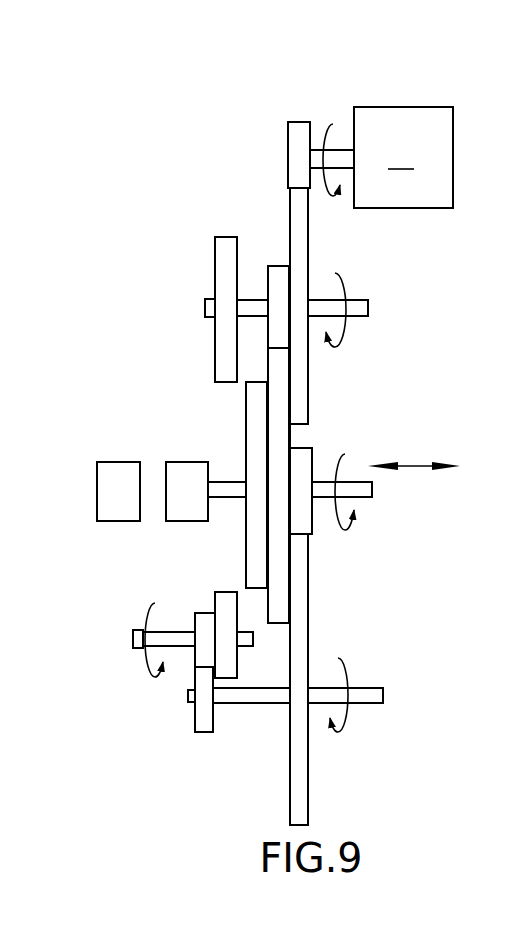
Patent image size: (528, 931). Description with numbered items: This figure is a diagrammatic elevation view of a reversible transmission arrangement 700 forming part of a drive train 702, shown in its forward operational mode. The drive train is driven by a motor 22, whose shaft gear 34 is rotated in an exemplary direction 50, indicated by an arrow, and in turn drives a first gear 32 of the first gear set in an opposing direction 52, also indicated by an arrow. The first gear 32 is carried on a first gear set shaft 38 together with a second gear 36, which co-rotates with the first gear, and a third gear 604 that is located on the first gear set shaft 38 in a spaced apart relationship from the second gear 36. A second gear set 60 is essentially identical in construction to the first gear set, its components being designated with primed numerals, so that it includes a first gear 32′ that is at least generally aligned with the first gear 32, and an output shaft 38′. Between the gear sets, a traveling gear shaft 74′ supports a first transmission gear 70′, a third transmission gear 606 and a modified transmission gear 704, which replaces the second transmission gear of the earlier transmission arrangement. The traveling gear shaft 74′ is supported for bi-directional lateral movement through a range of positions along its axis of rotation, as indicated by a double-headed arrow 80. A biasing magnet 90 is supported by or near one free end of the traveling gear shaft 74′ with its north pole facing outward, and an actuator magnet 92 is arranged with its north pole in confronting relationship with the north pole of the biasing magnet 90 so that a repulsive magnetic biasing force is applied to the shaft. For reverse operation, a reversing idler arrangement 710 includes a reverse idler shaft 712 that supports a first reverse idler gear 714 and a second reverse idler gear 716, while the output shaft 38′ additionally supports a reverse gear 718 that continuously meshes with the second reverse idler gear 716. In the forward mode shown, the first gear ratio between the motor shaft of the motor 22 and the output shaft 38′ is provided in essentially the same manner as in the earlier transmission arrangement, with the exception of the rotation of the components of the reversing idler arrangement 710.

The motor 22 is at (381, 157).
The first gear 32 is at (308, 222).
The first gear of the second gear set 32′ is at (310, 808).
The shaft gear 34 is at (288, 128).
The second gear 36 is at (278, 266).
The first gear set shaft 38 is at (368, 309).
The output shaft 38′ is at (383, 694).
The direction 50 is at (333, 124).
The opposing direction 52 is at (338, 346).
The second gear set 60 is at (314, 593).
The first transmission gear 70′ is at (290, 435).
The traveling gear shaft 74′ is at (372, 489).
The double-headed arrow 80 is at (408, 465).
The biasing magnet 90 is at (182, 522).
The actuator magnet 92 is at (113, 522).
The third gear 604 is at (227, 237).
The third transmission gear 606 is at (246, 432).
The reversible transmission arrangement 700 is at (420, 386).
The drive train 702 is at (390, 256).
The modified transmission gear 704 is at (310, 460).
The reversing idler arrangement 710 is at (185, 606).
The reverse idler shaft 712 is at (132, 636).
The first reverse idler gear 714 is at (227, 592).
The second reverse idler gear 716 is at (195, 658).
The reverse gear 718 is at (203, 732).